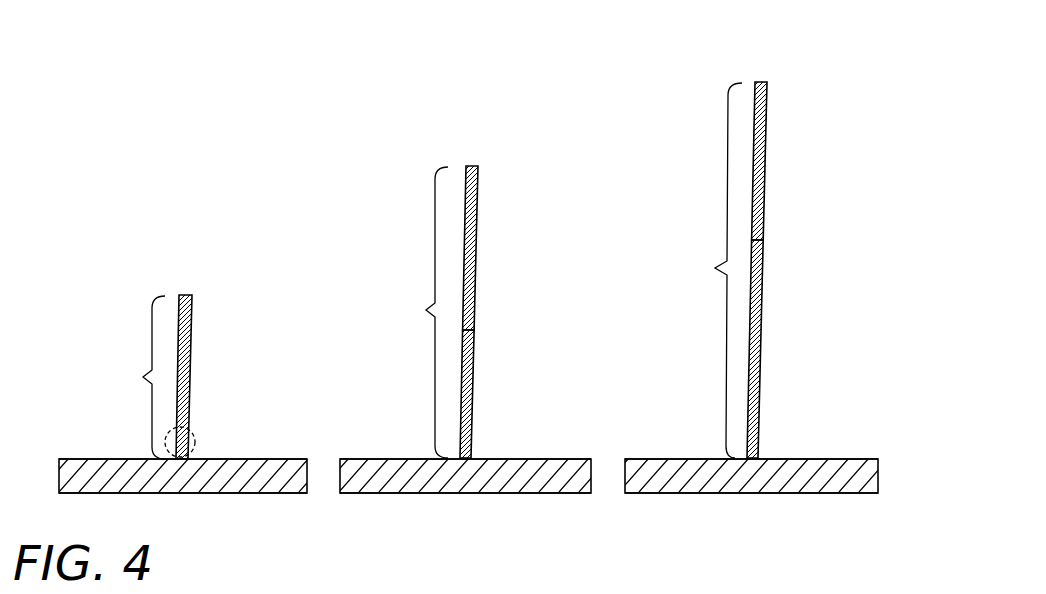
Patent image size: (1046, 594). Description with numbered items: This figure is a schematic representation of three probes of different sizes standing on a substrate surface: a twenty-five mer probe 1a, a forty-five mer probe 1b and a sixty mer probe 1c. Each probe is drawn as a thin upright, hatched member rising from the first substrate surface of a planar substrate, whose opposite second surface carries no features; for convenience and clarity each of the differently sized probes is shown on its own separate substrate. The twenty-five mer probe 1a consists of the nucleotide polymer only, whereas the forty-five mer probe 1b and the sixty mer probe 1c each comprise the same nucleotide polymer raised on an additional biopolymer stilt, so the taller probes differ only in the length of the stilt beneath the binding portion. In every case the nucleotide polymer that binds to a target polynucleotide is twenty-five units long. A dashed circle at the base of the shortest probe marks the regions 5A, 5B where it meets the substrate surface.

The 25 mer probe 1a is at (165, 273).
The 45 mer probe 1b is at (452, 143).
The 60 mer probe 1c is at (741, 60).
The bond region 5A is at (220, 416).
The bond region 5B is at (197, 440).